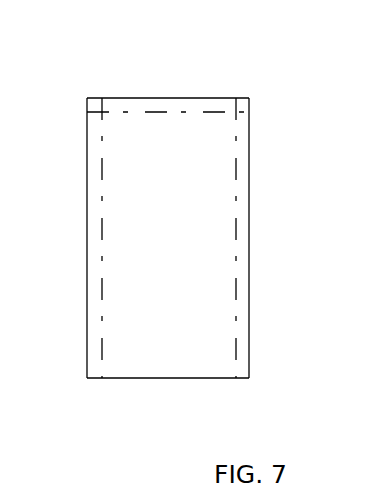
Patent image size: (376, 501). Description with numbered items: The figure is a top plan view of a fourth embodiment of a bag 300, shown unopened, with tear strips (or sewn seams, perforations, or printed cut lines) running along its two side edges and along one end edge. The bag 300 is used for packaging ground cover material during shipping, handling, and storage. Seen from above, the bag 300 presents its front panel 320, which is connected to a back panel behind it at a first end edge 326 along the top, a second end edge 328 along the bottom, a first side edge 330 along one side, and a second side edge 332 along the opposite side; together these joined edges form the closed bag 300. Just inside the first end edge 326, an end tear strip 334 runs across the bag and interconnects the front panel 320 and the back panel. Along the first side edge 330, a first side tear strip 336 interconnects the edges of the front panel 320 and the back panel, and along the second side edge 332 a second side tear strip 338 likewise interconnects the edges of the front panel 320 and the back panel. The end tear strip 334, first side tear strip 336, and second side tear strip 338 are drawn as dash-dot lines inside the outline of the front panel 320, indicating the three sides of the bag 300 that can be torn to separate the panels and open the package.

The bag 300 is at (179, 248).
The front panel 320 is at (179, 249).
The first end edge 326 is at (117, 97).
The second end edge 328 is at (186, 378).
The first side edge 330 is at (248, 150).
The second side edge 332 is at (87, 191).
The end tear strip 334 is at (177, 107).
The first side tear strip 336 is at (242, 263).
The second side tear strip 338 is at (90, 274).